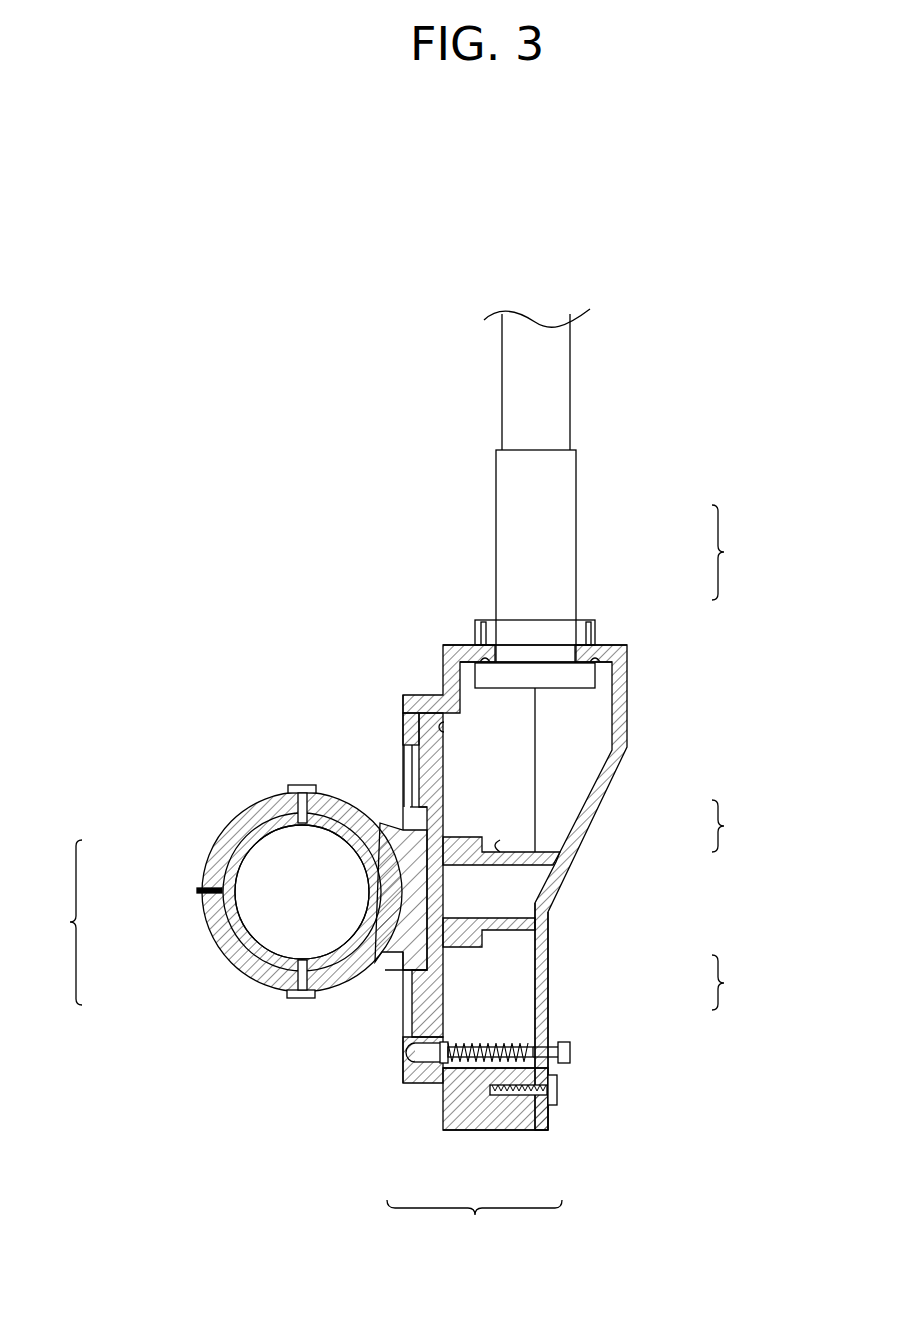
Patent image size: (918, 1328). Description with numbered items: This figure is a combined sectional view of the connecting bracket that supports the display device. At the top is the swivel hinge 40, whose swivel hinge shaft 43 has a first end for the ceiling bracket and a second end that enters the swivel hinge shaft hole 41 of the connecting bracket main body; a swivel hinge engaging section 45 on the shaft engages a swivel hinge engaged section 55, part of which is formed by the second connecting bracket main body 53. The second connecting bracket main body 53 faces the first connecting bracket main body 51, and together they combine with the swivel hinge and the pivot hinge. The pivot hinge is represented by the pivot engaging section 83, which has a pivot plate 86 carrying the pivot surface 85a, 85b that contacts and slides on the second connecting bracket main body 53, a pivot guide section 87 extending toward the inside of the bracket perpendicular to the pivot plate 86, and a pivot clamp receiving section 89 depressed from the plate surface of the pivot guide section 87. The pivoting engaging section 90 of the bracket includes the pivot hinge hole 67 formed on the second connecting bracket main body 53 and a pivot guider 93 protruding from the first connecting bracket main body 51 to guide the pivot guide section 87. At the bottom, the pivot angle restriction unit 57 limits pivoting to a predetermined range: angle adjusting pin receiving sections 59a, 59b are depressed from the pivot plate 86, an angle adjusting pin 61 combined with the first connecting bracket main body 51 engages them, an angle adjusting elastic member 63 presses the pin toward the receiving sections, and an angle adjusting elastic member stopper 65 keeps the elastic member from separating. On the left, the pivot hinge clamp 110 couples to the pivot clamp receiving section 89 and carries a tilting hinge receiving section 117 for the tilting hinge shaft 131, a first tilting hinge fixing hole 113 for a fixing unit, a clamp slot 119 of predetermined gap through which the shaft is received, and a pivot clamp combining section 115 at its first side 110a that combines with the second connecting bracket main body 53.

The swivel hinge 40 is at (765, 563).
The swivel hinge shaft 43 is at (566, 510).
The swivel hinge shaft hole 41 is at (502, 640).
The swivel hinge engaging section 45 is at (588, 640).
The swivel hinge engaged section 55 is at (590, 630).
The second connecting bracket main body 53 is at (443, 650).
The first connecting bracket main body 51 is at (620, 765).
The angle adjusting pin receiving section 59b is at (443, 727).
The pivot surface 85b is at (403, 715).
The first side 110a is at (397, 748).
The pivot plate 86 is at (430, 790).
The pivot hinge hole 67 is at (419, 750).
The pivoting engaging section 90 is at (765, 841).
The pivot guider 93 is at (500, 840).
The pivot clamp receiving section 89 is at (422, 887).
The pivot guide section 87 is at (547, 935).
The pivot engaging section 83 is at (765, 998).
The pivot surface 85a is at (418, 1045).
The angle adjusting pin receiving section 59a is at (415, 1070).
The angle adjusting elastic member stopper 65 is at (453, 1073).
The angle adjusting elastic member 63 is at (497, 1067).
The angle adjusting pin 61 is at (572, 1067).
The pivot angle restriction unit 57 is at (492, 1246).
The pivot hinge clamp 110 is at (64, 935).
The first tilting hinge fixing hole 113 is at (295, 824).
The tilting hinge receiving section 117 is at (228, 915).
The pivot clamp combining section 115 is at (375, 926).
The clamp slot 119 is at (197, 890).
The tilting hinge shaft 131 is at (300, 820).